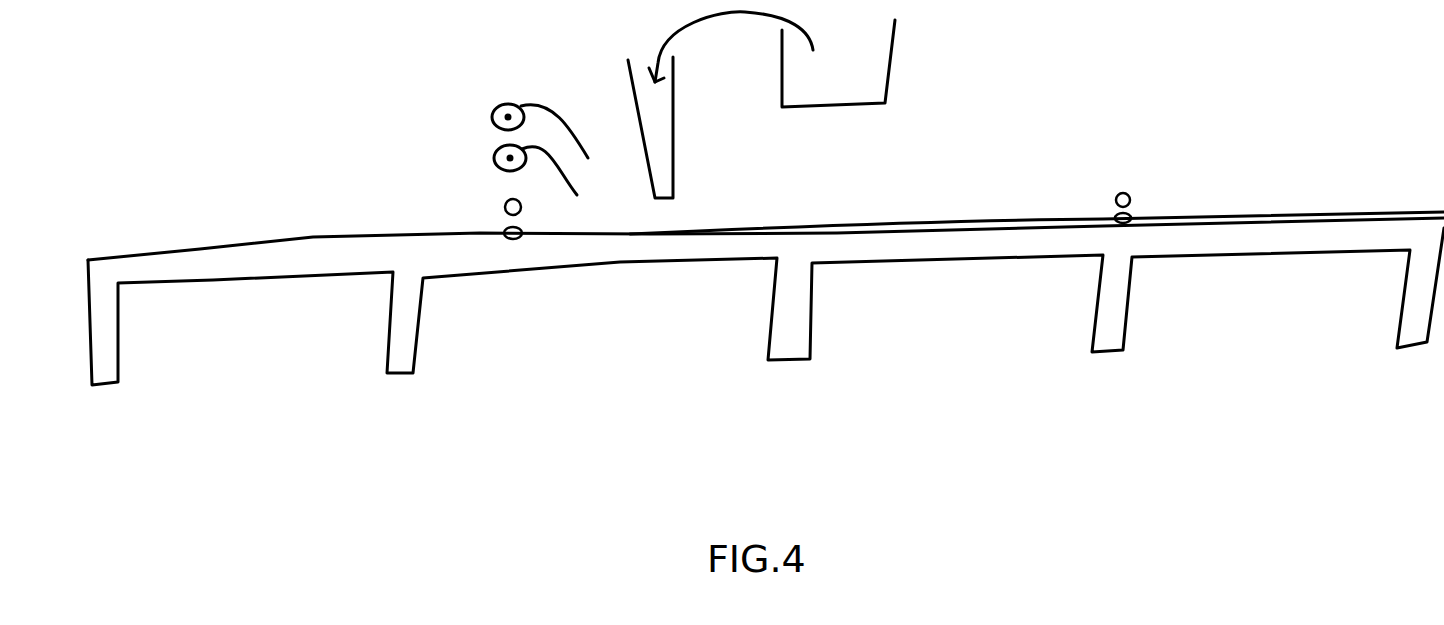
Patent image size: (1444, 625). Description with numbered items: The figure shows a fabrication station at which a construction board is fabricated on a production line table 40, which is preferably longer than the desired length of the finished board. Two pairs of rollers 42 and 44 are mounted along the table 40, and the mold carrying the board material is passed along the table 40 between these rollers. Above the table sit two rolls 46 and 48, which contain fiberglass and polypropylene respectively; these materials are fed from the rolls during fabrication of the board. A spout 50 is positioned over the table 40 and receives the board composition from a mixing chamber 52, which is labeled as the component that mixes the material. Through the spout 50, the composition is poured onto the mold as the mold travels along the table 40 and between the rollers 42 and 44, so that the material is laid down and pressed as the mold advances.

The production line table 40 is at (210, 285).
The pair of rollers 42 is at (502, 229).
The pair of rollers 44 is at (1133, 195).
The roll 46 is at (498, 158).
The roll 48 is at (493, 103).
The spout 50 is at (675, 163).
The mixing chamber 52 is at (893, 48).